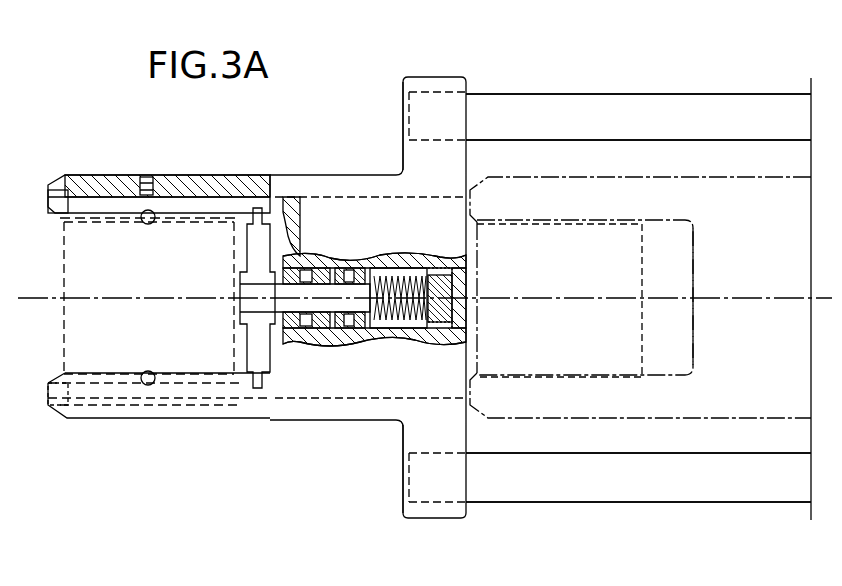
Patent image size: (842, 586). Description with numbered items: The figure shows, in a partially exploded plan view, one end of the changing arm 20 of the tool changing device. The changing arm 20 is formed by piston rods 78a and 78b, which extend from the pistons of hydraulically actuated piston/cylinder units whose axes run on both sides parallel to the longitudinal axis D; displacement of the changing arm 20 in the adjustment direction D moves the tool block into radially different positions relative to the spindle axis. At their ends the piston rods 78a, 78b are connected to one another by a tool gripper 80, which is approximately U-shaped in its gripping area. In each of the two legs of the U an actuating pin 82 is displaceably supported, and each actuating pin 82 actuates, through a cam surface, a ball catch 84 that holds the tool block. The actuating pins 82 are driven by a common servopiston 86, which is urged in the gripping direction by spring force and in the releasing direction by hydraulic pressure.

The changing arm 20 is at (742, 93).
The piston rod 78a is at (650, 113).
The piston rod 78b is at (668, 488).
The tool gripper 80 is at (348, 184).
The actuating pin 82 is at (204, 203).
The ball catch 84 is at (150, 224).
The servopiston 86 is at (362, 270).
The adjustment direction D is at (760, 298).